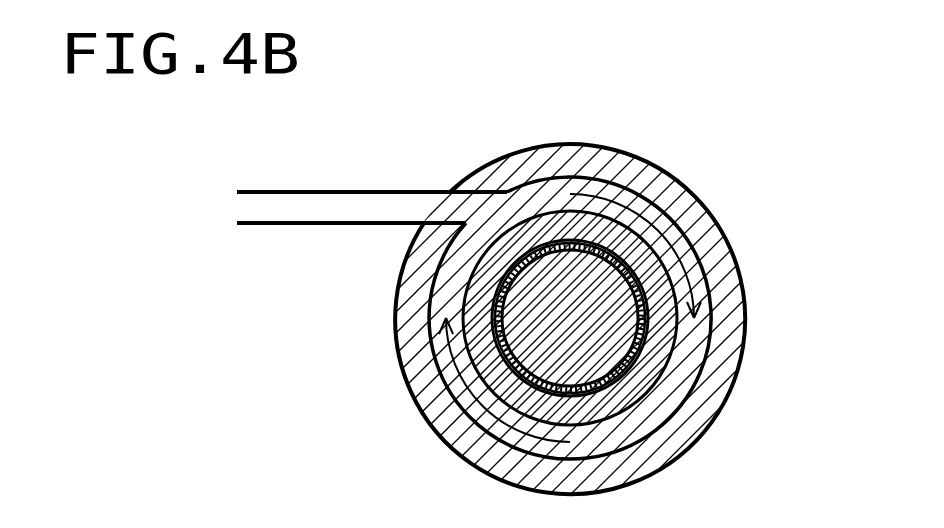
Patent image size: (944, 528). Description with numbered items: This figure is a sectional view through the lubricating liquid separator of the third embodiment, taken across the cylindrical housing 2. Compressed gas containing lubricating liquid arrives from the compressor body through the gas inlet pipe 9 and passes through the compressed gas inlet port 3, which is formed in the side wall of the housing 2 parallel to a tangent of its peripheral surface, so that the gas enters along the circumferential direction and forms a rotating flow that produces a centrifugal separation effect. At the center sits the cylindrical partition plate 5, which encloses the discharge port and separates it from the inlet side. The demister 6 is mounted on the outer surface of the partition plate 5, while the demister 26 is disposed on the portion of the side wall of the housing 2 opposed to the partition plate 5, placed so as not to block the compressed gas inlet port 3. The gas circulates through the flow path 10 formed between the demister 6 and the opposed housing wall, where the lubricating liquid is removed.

The housing 2 is at (733, 257).
The compressed gas inlet port 3 is at (440, 208).
The partition plate 5 is at (640, 321).
The demister 6 is at (610, 398).
The gas inlet pipe 9 is at (313, 215).
The flow path 10 is at (682, 362).
The demister 26 is at (453, 413).